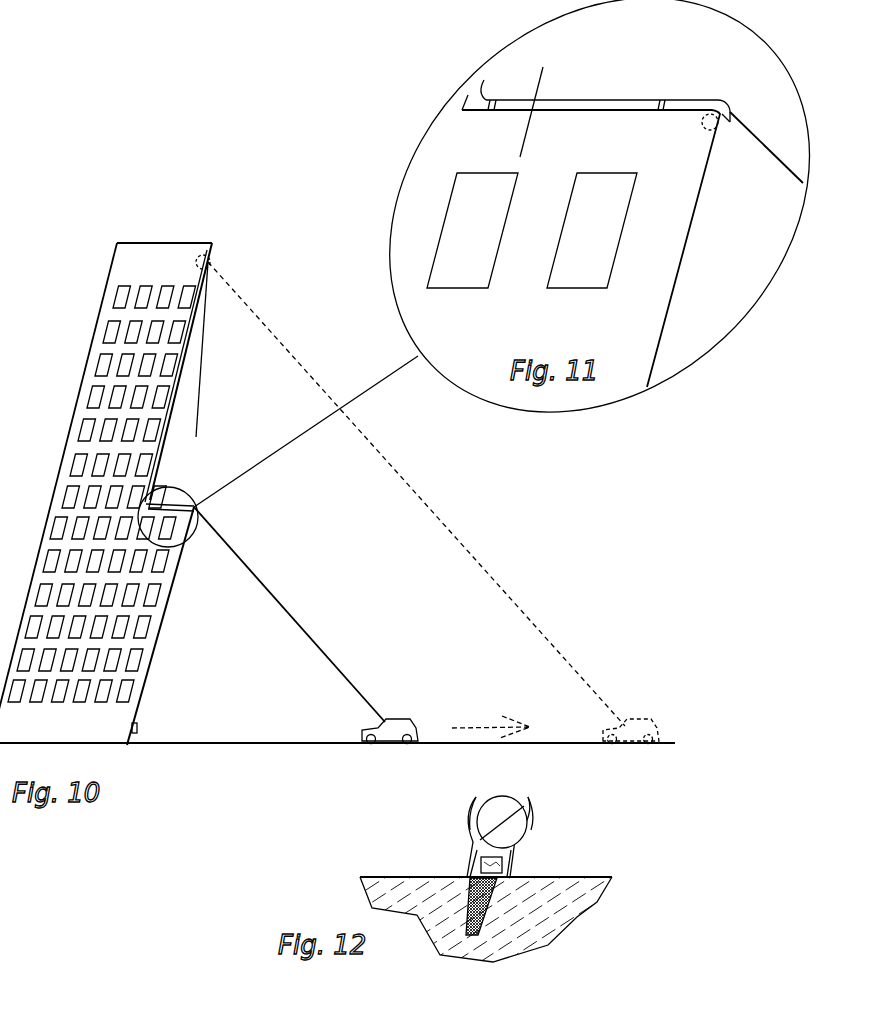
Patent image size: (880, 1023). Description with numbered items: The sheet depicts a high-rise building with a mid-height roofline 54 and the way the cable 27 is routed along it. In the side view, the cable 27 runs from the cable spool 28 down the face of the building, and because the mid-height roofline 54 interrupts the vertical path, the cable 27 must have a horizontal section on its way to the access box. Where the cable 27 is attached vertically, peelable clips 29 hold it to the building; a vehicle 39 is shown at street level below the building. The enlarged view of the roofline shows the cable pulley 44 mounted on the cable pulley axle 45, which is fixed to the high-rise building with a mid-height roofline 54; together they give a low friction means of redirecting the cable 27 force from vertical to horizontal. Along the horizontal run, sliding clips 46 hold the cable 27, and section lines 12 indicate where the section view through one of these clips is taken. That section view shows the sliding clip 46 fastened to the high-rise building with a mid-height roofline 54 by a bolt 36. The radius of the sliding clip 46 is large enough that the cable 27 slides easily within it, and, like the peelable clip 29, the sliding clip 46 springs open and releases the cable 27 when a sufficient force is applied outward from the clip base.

In FIG. 11, the section lines 12 is at (563, 159).
In FIG. 10, the cable 27 is at (262, 583).
In FIG. 11, the cable 27 is at (792, 175).
In FIG. 12, the cable 27 is at (512, 806).
In FIG. 10, the cable spool 28 is at (209, 258).
In FIG. 10, the peelable clips 29 is at (147, 503).
In FIG. 12, the bolt 36 is at (487, 898).
In FIG. 10, the vehicle 39 is at (603, 732).
In FIG. 10, the cable pulley 44 is at (196, 508).
In FIG. 11, the cable pulley 44 is at (723, 119).
In FIG. 11, the cable pulley axle 45 is at (706, 129).
In FIG. 11, the sliding clips 46 is at (660, 98).
In FIG. 12, the sliding clips 46 is at (515, 850).
In FIG. 10, the high-rise building with a mid-height roofline 54 is at (156, 262).
In FIG. 11, the high-rise building with a mid-height roofline 54 is at (647, 290).
In FIG. 12, the high-rise building with a mid-height roofline 54 is at (431, 906).